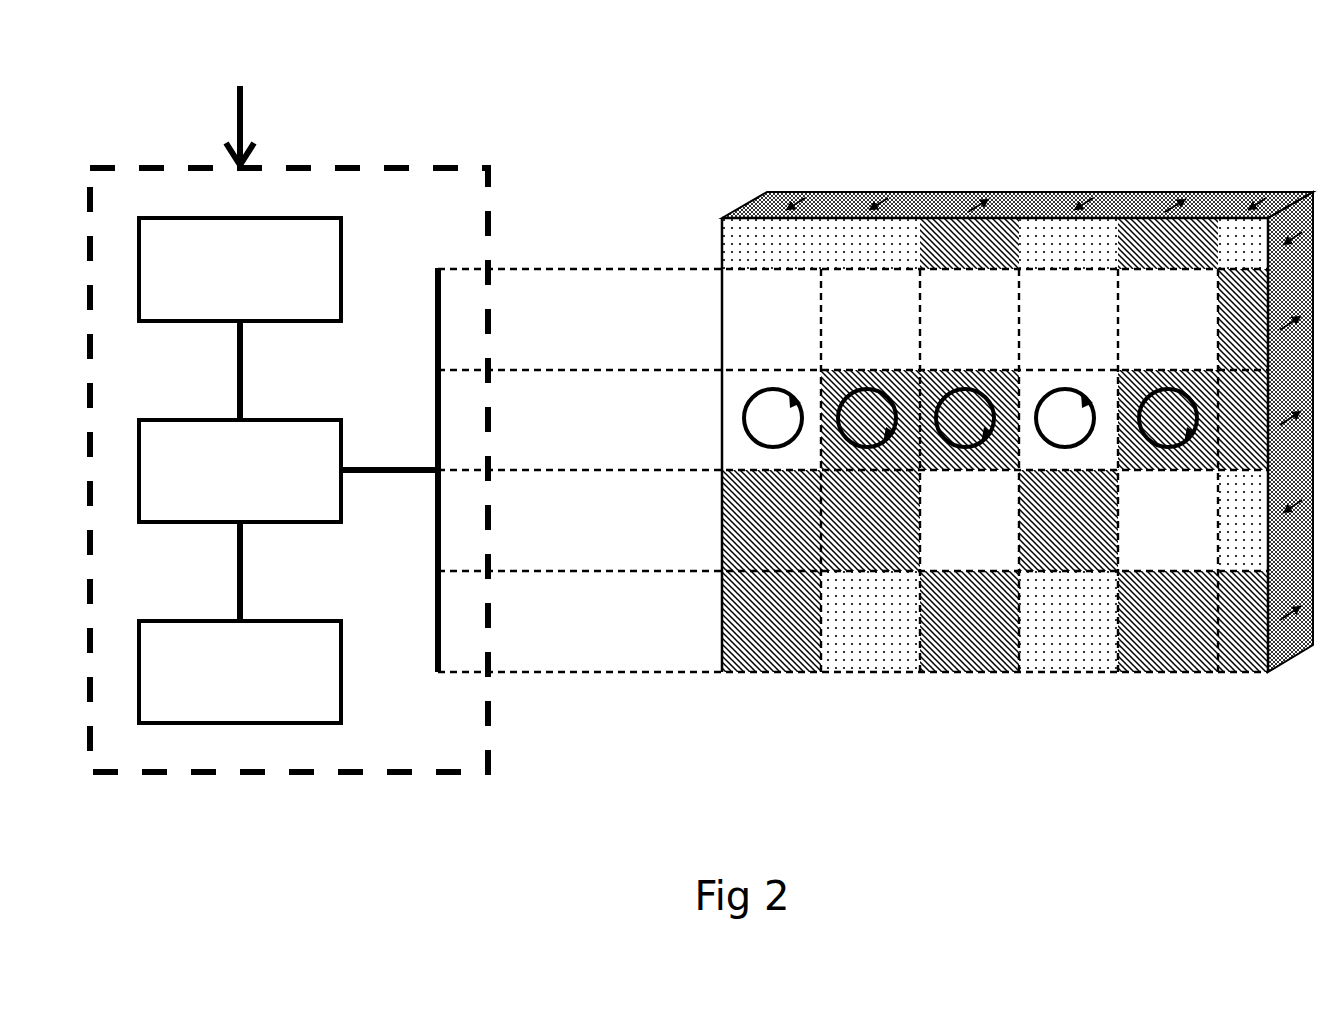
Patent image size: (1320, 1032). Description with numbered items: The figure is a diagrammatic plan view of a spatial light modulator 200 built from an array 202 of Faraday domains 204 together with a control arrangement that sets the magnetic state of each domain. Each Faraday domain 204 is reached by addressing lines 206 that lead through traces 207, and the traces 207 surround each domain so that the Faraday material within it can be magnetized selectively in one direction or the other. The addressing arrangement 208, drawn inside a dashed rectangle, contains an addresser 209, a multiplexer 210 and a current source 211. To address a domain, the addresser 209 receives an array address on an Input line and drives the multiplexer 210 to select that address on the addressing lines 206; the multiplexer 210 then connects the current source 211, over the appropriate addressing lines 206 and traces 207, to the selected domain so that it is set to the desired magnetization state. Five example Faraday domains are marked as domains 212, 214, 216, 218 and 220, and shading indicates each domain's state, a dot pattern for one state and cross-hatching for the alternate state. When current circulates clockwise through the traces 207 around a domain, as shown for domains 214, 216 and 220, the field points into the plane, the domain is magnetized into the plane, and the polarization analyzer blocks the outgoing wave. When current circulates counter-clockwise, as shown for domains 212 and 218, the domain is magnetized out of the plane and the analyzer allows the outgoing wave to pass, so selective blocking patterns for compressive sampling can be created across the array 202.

The spatial light modulator 200 is at (705, 70).
The array 202 is at (931, 676).
The Faraday domain 204 is at (1163, 630).
The addressing lines 206 is at (436, 287).
The traces 207 is at (600, 268).
The addressing arrangement 208 is at (437, 778).
The addresser 209 is at (170, 218).
The multiplexer 210 is at (166, 424).
The current source 211 is at (205, 620).
The Faraday domain 212 is at (734, 366).
The Faraday domain 214 is at (840, 366).
The Faraday domain 216 is at (940, 366).
The Faraday domain 218 is at (1040, 366).
The Faraday domain 220 is at (1142, 366).